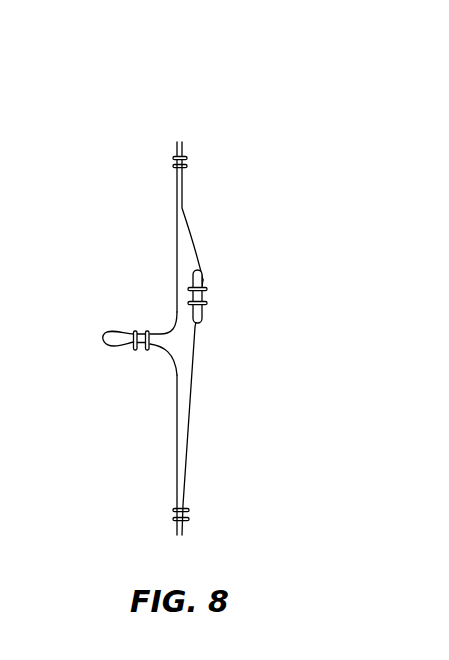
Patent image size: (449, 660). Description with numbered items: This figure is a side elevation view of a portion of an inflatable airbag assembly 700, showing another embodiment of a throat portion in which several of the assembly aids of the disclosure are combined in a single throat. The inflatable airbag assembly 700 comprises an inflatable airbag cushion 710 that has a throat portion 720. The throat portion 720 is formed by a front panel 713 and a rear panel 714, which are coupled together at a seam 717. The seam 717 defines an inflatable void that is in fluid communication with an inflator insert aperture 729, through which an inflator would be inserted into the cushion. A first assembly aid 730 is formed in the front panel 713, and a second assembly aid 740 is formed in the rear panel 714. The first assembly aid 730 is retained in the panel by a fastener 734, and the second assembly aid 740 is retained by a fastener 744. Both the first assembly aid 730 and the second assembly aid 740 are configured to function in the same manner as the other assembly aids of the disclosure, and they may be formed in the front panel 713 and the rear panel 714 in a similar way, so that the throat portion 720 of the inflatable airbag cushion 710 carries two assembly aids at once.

The inflatable airbag assembly 700 is at (140, 97).
The inflatable airbag cushion 710 is at (182, 133).
The seam 717 is at (173, 158).
The throat portion 720 is at (202, 202).
The second assembly aid 740 is at (223, 285).
The fastener 744 is at (207, 304).
The inflator insert aperture 729 is at (180, 337).
The first assembly aid 730 is at (92, 337).
The fastener 734 is at (130, 348).
The front panel 713 is at (177, 400).
The rear panel 714 is at (190, 440).